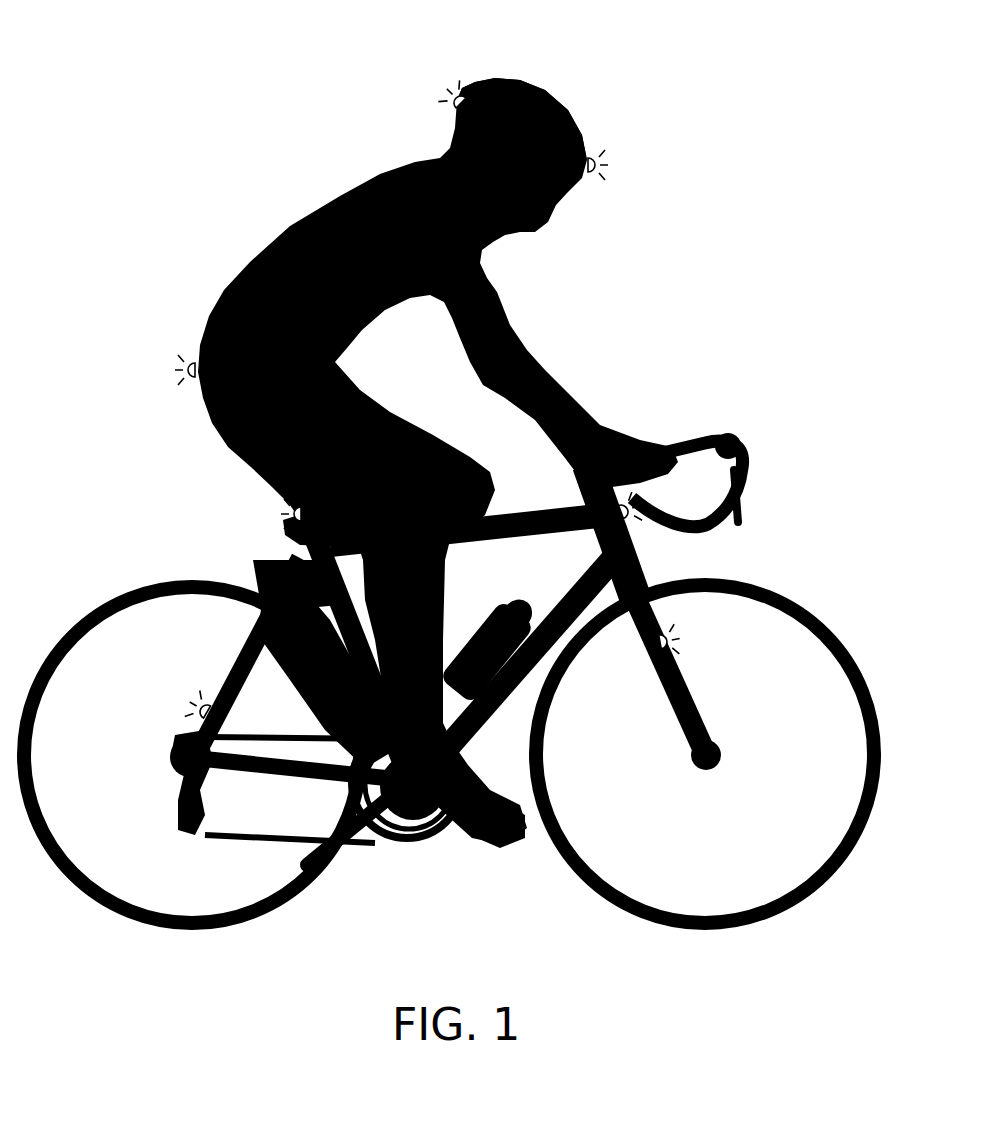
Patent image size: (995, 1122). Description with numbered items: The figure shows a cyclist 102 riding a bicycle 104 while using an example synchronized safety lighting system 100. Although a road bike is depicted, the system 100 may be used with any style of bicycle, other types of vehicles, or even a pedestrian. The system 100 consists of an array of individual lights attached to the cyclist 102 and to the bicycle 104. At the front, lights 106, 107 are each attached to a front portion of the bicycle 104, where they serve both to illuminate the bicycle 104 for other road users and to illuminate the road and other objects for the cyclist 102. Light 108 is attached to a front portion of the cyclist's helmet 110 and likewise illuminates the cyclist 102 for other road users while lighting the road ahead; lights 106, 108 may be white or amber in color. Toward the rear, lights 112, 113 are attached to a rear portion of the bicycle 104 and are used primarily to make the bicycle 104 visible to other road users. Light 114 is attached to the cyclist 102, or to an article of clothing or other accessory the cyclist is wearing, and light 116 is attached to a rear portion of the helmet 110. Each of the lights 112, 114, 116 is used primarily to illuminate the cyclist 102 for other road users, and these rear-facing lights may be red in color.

The synchronized safety lighting system 100 is at (158, 115).
The cyclist 102 is at (345, 187).
The bicycle 104 is at (150, 582).
The light 106 is at (637, 517).
The light 107 is at (672, 650).
The light 108 is at (597, 163).
The helmet 110 is at (550, 101).
The light 112 is at (288, 510).
The light 113 is at (196, 717).
The light 114 is at (186, 364).
The light 116 is at (452, 94).